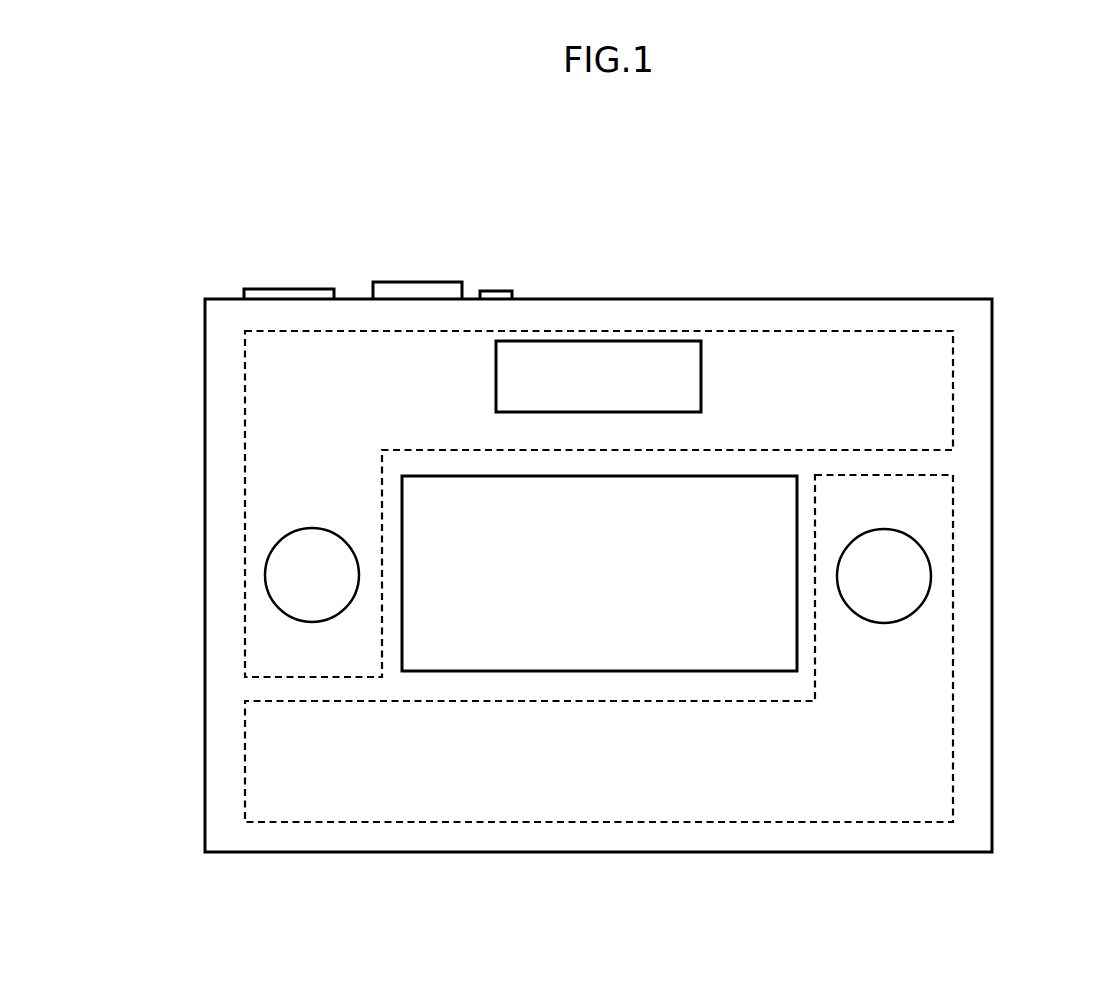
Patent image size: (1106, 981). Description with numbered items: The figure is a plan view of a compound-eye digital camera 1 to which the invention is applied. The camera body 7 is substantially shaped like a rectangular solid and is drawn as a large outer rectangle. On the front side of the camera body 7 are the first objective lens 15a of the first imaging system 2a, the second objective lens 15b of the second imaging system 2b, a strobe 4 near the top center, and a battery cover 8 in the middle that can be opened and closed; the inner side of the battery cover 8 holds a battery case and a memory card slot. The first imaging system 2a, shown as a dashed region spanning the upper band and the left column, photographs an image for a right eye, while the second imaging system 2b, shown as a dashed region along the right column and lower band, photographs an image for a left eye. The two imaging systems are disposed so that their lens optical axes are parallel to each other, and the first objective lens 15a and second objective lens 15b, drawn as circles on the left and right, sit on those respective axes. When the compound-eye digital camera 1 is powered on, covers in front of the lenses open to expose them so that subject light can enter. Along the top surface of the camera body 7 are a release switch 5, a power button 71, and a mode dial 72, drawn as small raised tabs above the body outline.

The compound-eye digital camera 1 is at (874, 274).
The first imaging system 2a is at (248, 498).
The second imaging system 2b is at (948, 722).
The strobe 4 is at (617, 348).
The release switch 5 is at (416, 285).
The camera body 7 is at (207, 737).
The battery cover 8 is at (505, 660).
The first objective lens 15a is at (272, 578).
The second objective lens 15b is at (918, 575).
The power button 71 is at (497, 292).
The mode dial 72 is at (287, 290).